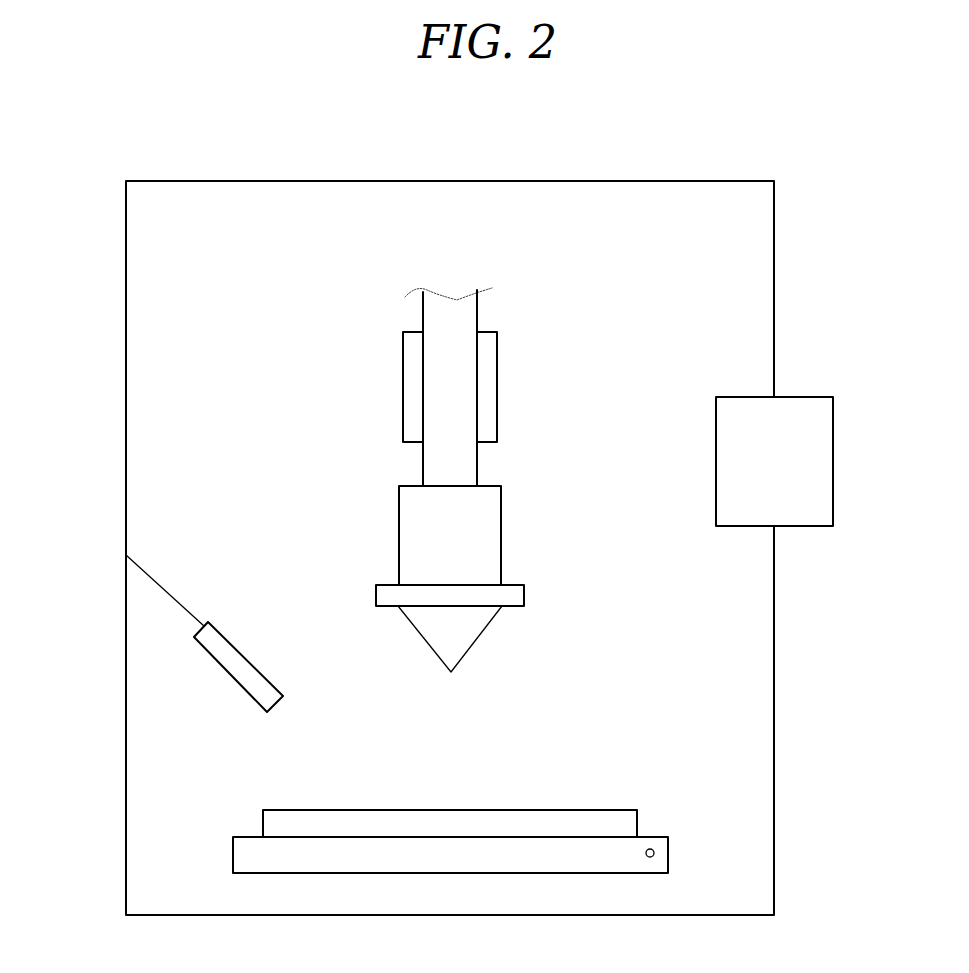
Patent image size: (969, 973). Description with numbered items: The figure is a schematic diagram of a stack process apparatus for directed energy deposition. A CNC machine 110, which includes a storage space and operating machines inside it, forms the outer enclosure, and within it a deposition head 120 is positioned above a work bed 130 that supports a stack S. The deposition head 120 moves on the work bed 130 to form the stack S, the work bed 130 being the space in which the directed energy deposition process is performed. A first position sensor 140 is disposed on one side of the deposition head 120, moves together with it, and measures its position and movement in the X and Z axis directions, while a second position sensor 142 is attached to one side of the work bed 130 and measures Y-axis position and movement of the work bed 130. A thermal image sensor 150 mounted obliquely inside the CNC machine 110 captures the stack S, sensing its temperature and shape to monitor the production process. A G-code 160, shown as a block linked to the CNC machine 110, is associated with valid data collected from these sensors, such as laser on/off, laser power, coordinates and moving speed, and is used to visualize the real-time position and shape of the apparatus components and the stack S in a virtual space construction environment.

The CNC machine 110 is at (655, 181).
The deposition head 120 is at (501, 535).
The work bed 130 is at (668, 849).
The first position sensor 140 is at (490, 400).
The second position sensor 142 is at (653, 849).
The thermal image sensor 150 is at (200, 655).
The G-code 160 is at (803, 397).
The stack S is at (562, 810).